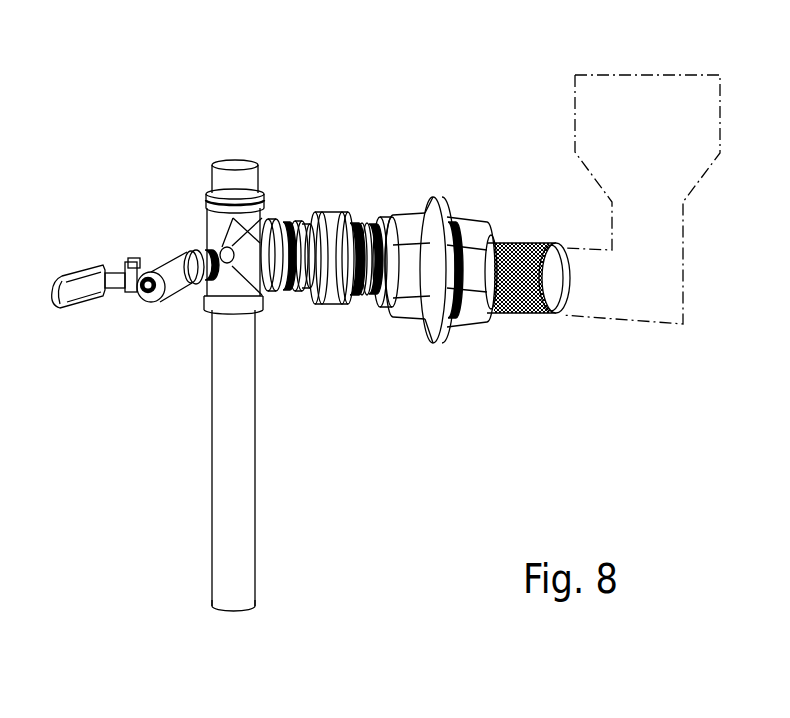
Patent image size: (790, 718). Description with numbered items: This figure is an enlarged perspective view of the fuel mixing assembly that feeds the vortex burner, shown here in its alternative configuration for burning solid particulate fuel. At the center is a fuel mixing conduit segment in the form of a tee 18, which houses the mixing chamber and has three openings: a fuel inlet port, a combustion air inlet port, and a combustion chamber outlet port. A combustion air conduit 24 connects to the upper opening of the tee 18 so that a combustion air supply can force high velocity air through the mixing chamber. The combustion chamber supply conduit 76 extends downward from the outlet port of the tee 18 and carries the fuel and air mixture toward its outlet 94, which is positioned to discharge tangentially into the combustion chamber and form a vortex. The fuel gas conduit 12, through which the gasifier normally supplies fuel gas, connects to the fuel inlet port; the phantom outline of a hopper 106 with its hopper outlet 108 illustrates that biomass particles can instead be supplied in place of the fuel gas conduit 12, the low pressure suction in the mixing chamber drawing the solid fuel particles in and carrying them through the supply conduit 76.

The fuel gas conduit 12 is at (541, 305).
The tee 18 is at (233, 220).
The combustion air conduit 24 is at (238, 161).
The combustion chamber supply conduit 76 is at (235, 408).
The outlet 94 is at (230, 608).
The hopper 106 is at (662, 98).
The hopper outlet 108 is at (562, 313).